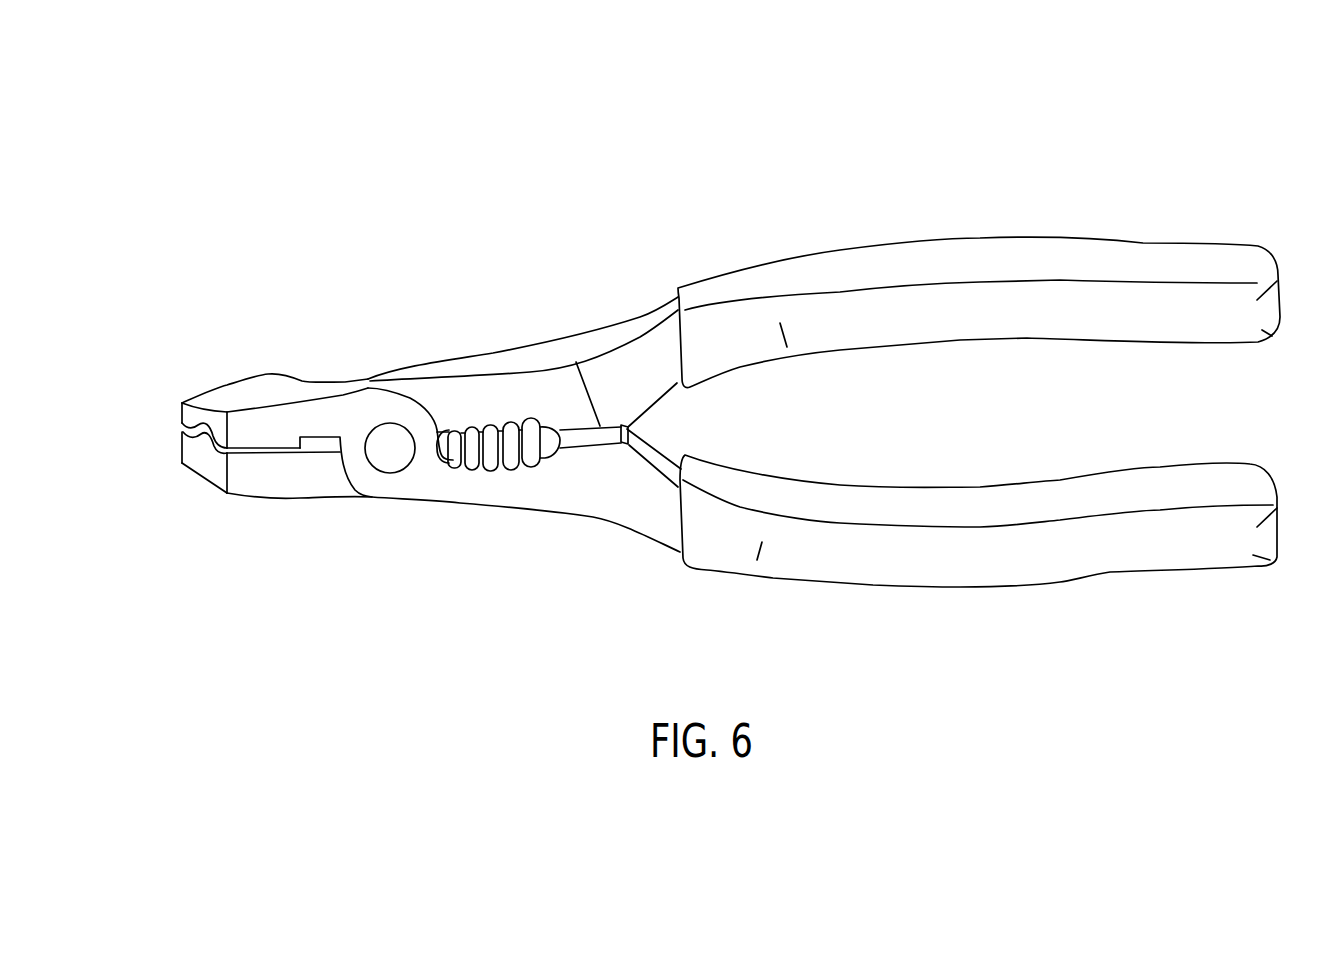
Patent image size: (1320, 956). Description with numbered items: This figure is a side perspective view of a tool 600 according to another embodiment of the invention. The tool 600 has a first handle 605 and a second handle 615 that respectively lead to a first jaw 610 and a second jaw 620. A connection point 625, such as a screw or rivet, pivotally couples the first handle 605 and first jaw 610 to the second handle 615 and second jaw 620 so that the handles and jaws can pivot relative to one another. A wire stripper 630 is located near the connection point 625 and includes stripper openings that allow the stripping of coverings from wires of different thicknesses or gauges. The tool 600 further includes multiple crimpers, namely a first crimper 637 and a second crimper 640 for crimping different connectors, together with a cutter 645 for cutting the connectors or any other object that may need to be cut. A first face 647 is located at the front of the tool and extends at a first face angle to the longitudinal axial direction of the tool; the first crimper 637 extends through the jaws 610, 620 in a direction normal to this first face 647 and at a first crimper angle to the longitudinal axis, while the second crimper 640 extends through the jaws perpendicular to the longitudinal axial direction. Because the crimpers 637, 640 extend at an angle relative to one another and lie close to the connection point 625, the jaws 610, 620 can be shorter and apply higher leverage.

The tool 600 is at (1131, 191).
The first handle 605 is at (1125, 267).
The first jaw 610 is at (218, 479).
The second handle 615 is at (1060, 567).
The second jaw 620 is at (193, 417).
The connection point 625 is at (382, 433).
The wire stripper 630 is at (507, 462).
The first crimper 637 is at (203, 438).
The second crimper 640 is at (262, 440).
The cutter 645 is at (318, 440).
The first face 647 is at (188, 450).